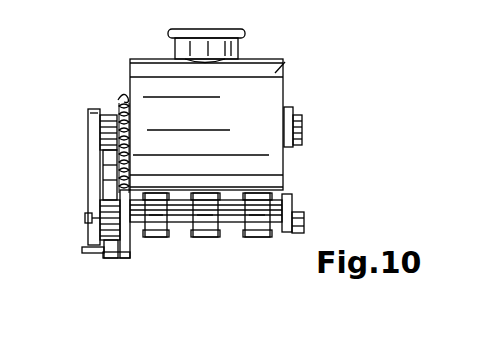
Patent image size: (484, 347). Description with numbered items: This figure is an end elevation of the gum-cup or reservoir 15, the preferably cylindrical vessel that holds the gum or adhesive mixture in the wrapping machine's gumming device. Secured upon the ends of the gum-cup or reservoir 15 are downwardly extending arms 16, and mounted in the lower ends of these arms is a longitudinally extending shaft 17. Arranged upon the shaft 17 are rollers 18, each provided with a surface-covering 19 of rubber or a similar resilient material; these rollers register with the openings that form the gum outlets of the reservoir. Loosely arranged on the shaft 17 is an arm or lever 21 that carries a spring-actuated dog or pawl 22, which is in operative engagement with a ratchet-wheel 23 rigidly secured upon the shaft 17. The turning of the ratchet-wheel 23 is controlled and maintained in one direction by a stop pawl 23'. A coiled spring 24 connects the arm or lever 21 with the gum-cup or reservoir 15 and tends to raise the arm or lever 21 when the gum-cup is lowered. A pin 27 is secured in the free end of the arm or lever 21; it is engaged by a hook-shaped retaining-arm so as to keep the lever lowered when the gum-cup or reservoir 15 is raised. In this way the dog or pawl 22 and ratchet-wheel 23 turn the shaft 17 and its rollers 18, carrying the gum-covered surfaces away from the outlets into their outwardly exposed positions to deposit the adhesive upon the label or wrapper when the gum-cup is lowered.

The gum-cup or reservoir 15 is at (282, 62).
The downwardly extending arms 16 is at (292, 165).
The shaft 17 is at (306, 217).
The rollers 18 is at (168, 230).
The surface-covering 19 is at (260, 240).
The arm or lever 21 is at (123, 231).
The dog or pawl 22 is at (113, 246).
The ratchet-wheel 23 is at (71, 235).
The stop pawl 23' is at (76, 157).
The coiled spring 24 is at (132, 147).
The pin 27 is at (82, 255).